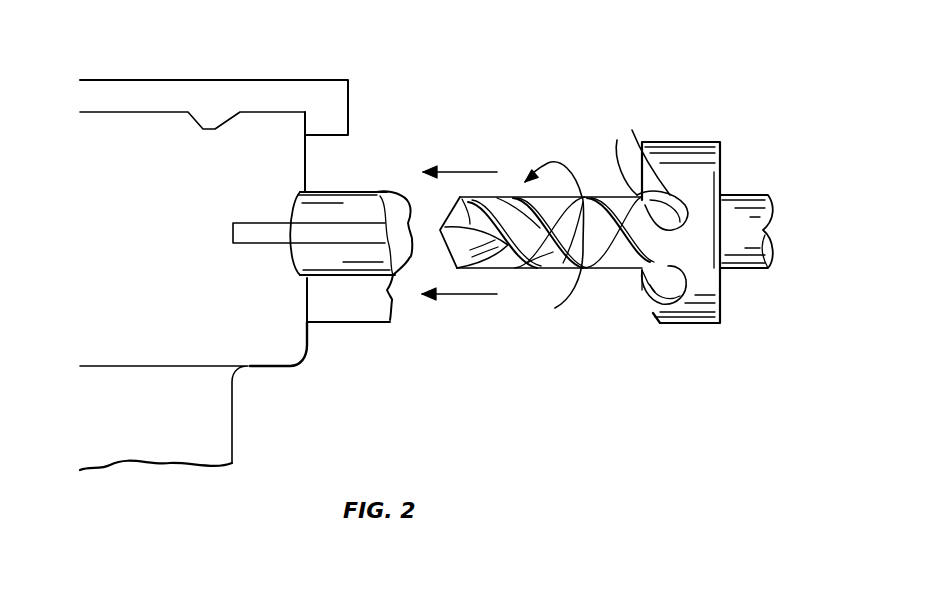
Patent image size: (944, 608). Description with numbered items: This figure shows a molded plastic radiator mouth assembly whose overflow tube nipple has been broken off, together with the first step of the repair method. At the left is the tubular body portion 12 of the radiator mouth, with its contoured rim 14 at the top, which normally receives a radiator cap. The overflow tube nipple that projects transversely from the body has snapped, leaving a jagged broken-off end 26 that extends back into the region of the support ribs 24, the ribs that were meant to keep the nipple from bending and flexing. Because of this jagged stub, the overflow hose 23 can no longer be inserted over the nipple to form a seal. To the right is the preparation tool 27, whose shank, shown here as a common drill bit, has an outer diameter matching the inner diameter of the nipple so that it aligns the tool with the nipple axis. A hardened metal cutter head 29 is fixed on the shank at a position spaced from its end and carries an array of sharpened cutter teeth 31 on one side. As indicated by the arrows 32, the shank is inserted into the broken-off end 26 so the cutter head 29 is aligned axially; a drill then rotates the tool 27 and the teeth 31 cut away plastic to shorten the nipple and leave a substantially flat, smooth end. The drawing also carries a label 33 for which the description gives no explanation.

The tubular body portion 12 is at (268, 157).
The contoured rim 14 is at (297, 90).
The overflow hose 23 is at (543, 265).
The support ribs 24 is at (267, 232).
The jagged broken-off end 26 is at (413, 315).
The preparation tool 27 is at (597, 117).
The cutter head 29 is at (693, 325).
The cutter blades or teeth 31 is at (647, 158).
The arrows 32 is at (458, 172).
The rotation arrow 33 is at (559, 160).